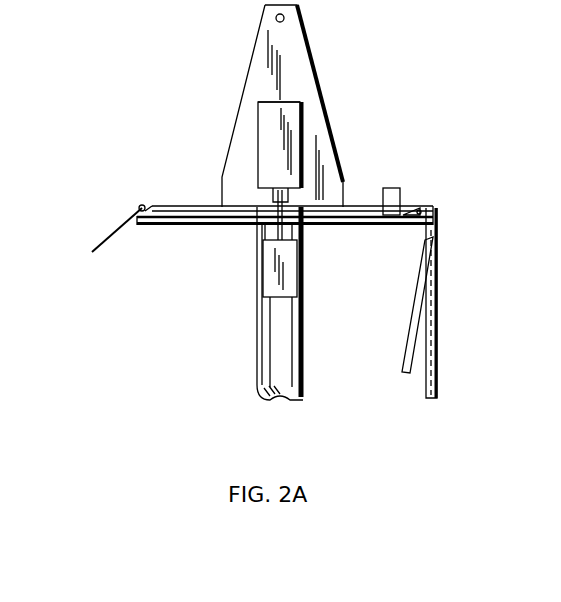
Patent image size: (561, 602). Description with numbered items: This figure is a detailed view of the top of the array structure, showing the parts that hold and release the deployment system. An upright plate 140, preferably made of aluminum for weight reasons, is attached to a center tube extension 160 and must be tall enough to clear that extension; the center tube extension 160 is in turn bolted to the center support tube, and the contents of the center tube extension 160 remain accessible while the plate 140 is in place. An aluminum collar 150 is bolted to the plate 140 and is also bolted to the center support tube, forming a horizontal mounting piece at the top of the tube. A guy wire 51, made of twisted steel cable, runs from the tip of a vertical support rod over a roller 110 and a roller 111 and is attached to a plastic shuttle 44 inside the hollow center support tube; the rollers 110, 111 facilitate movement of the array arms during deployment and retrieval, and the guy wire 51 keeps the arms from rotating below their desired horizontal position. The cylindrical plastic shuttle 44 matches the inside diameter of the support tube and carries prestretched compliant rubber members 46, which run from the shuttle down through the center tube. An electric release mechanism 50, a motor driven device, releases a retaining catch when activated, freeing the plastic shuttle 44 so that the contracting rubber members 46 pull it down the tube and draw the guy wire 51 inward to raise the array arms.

The plate 140 is at (245, 83).
The electric release mechanism 50 is at (270, 127).
The center tube extension 160 is at (288, 100).
The roller 111 is at (257, 203).
The collar 150 is at (203, 228).
The guy wire 51 is at (160, 205).
The roller 110 is at (140, 207).
The plastic shuttle 44 is at (272, 280).
The compliant rubber member 46 is at (262, 335).